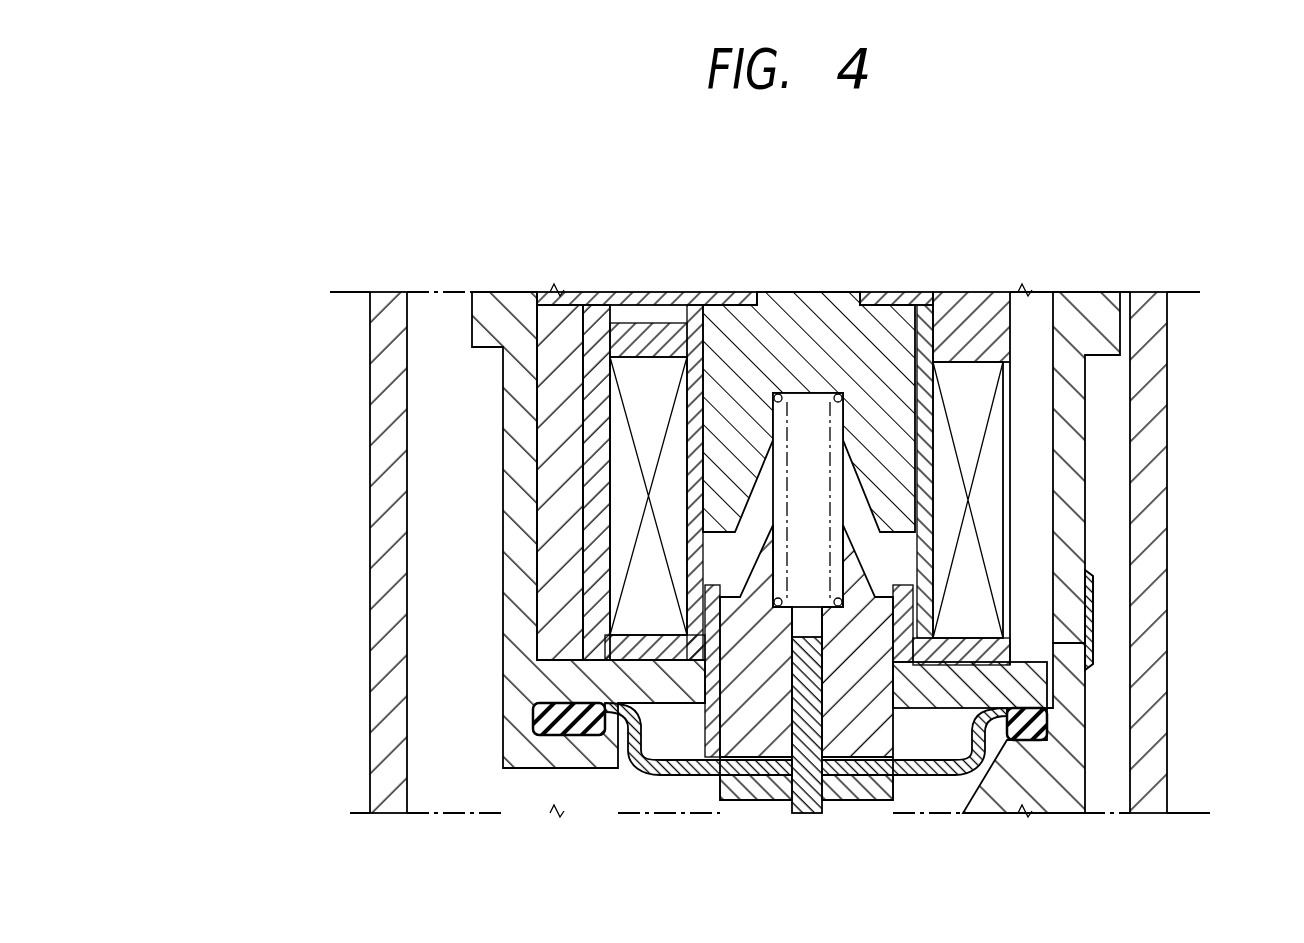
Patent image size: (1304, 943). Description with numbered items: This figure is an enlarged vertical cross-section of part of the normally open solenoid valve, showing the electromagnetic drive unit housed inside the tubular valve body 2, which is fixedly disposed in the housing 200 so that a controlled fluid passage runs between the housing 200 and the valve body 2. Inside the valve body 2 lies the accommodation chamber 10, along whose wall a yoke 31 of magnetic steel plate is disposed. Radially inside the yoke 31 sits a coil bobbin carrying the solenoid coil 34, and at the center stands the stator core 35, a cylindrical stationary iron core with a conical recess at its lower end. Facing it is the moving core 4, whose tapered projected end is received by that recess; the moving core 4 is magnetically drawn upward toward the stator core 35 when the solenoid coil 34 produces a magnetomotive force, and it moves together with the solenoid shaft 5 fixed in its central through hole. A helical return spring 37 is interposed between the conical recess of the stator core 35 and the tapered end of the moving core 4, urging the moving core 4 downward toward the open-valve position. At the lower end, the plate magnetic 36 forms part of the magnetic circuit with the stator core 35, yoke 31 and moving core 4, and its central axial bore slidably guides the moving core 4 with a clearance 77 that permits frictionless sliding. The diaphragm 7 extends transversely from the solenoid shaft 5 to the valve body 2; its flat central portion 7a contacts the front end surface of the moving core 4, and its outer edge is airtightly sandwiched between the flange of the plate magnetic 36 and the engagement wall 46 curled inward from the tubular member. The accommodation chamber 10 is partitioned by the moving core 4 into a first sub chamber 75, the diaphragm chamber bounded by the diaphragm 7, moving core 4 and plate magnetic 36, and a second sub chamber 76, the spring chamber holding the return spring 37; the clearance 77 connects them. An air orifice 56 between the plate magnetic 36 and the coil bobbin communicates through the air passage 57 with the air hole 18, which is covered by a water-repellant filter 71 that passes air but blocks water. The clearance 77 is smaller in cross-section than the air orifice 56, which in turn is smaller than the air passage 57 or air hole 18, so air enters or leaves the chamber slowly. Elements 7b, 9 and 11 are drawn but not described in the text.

The valve body 2 is at (1077, 411).
The housing 200 is at (370, 717).
The moving core 4 is at (752, 740).
The solenoid shaft 5 is at (773, 800).
The diaphragm 7 is at (806, 801).
The flat central portion 7a is at (905, 790).
The diaphragm plate second portion 7b is at (880, 860).
The retainer 9 is at (770, 805).
The accommodation chamber 10 is at (634, 531).
The nut 11 is at (681, 798).
The air hole 18 is at (1068, 605).
The yoke 31 is at (548, 455).
The solenoid coil 34 is at (625, 410).
The stator core 35 is at (888, 305).
The plate magnetic 36 is at (1040, 684).
The return spring 37 is at (843, 393).
The engagement wall 46 is at (605, 795).
The air orifice 56 is at (997, 662).
The air passage 57 is at (1033, 493).
The water-repellant filter 71 is at (1072, 622).
The first sub chamber 75 is at (628, 618).
The second sub chamber 76 is at (710, 572).
The clearance 77 is at (885, 658).